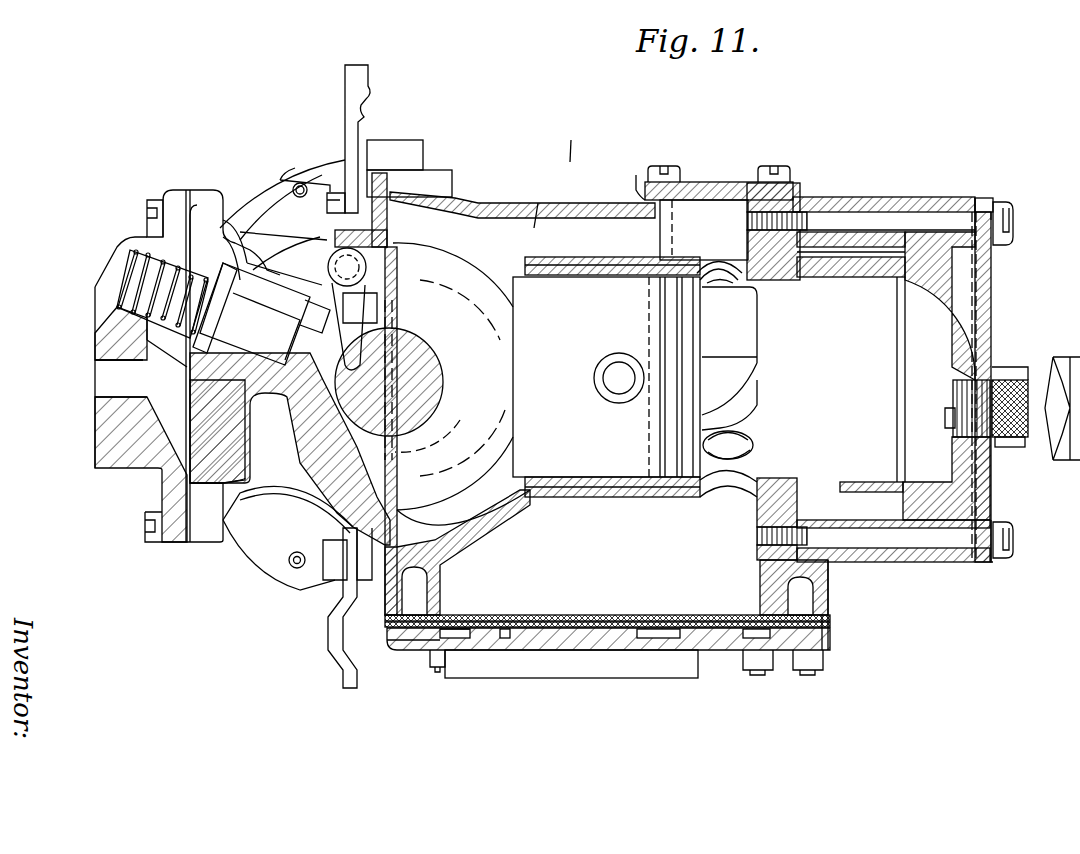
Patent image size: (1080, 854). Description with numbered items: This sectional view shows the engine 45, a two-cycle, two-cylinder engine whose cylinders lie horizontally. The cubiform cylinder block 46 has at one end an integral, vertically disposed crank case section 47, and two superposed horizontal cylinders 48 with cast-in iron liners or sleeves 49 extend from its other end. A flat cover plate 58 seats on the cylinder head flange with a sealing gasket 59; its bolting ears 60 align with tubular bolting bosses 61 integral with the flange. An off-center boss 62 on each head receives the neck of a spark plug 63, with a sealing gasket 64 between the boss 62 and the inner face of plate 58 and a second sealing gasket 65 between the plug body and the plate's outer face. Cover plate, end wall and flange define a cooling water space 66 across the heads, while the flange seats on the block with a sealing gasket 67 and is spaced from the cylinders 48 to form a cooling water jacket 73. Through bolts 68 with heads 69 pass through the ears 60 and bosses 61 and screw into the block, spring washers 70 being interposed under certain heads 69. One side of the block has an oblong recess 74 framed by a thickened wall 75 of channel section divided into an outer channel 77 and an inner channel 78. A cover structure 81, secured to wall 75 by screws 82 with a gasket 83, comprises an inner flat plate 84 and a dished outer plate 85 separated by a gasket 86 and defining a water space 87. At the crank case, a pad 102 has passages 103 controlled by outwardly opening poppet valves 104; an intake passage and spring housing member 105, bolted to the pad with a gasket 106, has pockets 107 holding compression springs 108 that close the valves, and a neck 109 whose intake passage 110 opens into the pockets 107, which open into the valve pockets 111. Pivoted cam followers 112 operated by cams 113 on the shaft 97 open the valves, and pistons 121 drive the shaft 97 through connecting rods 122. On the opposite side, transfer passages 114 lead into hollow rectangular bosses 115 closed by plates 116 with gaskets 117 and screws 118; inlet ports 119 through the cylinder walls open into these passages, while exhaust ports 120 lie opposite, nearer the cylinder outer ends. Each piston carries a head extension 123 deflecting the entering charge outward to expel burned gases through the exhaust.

The engine 45 is at (570, 162).
The cylinder block 46 is at (592, 204).
The crank case section 47 is at (425, 195).
The cylinders 48 is at (612, 257).
The liners or sleeves 49 is at (565, 257).
The cover plate 58 is at (985, 320).
The sealing gasket 59 is at (978, 198).
The bolting ears 60 is at (988, 200).
The bolting bosses 61 is at (850, 204).
The boss 62 is at (968, 373).
The spark plug 63 is at (1058, 460).
The sealing gasket 64 is at (985, 440).
The sealing gasket 65 is at (998, 369).
The cooling water space 66 is at (963, 295).
The sealing gasket 67 is at (780, 212).
The through bolts 68 is at (905, 208).
The heads 69 is at (1016, 222).
The spring washers 70 is at (995, 205).
The cooling water jacket 73 is at (848, 262).
The recess 74 is at (500, 507).
The thickened wall 75 is at (812, 582).
The outer channel 77 is at (814, 598).
The inner channel 78 is at (425, 580).
The cover structure 81 is at (675, 660).
The screws 82 is at (437, 670).
The gasket 83 is at (450, 615).
The inner flat plate 84 is at (632, 622).
The outer plate 85 is at (545, 640).
The gasket 86 is at (425, 628).
The water space 87 is at (598, 645).
The crank shaft 97 is at (415, 340).
The pad 102 is at (222, 545).
The passages 103 is at (265, 262).
The poppet valve 104 is at (210, 195).
The intake passage and spring housing member 105 is at (120, 262).
The gasket 106 is at (186, 545).
The pockets 107 is at (152, 232).
The compression springs 108 is at (130, 290).
The neck 109 is at (110, 460).
The intake passage 110 is at (98, 374).
The valve pockets 111 is at (184, 215).
The cam followers 112 is at (340, 290).
The cams 113 is at (440, 437).
The transfer passages 114 is at (536, 203).
The hollow rectangular bosses 115 is at (704, 205).
The closure plates 116 is at (742, 182).
The gaskets 117 is at (634, 175).
The screws 118 is at (668, 168).
The inlet ports 119 is at (714, 262).
The exhaust ports 120 is at (745, 447).
The pistons 121 is at (615, 318).
The connecting rods 122 is at (482, 350).
The extension 123 is at (745, 343).